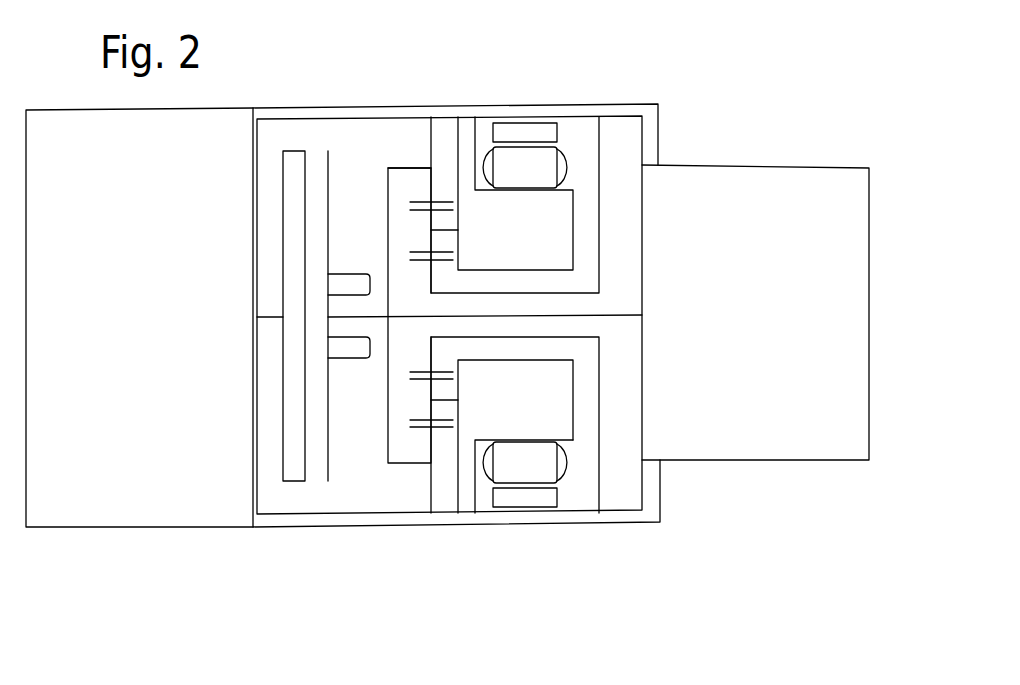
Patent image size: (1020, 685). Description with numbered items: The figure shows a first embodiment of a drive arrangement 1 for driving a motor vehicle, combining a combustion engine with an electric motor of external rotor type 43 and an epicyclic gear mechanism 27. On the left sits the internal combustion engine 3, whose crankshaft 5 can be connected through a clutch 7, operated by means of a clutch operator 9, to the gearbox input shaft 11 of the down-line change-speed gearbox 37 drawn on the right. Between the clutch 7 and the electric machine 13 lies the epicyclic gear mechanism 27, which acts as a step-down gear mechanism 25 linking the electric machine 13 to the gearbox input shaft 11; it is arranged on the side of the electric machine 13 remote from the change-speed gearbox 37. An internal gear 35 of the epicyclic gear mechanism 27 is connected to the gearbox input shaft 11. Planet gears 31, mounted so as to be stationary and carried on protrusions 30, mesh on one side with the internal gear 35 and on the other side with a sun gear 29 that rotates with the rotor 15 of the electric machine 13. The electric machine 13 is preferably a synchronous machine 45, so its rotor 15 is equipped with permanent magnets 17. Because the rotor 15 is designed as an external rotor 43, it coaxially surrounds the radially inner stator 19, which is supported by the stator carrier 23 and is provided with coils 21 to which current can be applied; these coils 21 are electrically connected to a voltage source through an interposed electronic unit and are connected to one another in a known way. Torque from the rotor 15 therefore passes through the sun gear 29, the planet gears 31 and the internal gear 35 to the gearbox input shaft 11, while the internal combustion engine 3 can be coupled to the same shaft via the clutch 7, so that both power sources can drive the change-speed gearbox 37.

The drive arrangement 1 is at (252, 95).
The internal combustion engine 3 is at (157, 507).
The crankshaft 5 is at (268, 320).
The clutch 7 is at (307, 493).
The clutch operator 9 is at (354, 351).
The gearbox input shaft 11 is at (620, 318).
The electric machine 13 is at (569, 480).
The rotor 15 is at (513, 497).
The permanent magnets 17 is at (537, 133).
The stator 19 is at (487, 484).
The coils 21 is at (484, 458).
The stator carrier 23 is at (482, 418).
The step-down gear mechanism 25 is at (433, 150).
The epicyclic gear mechanism 27 is at (428, 467).
The sun gear 29 is at (436, 280).
The protrusions 30 is at (455, 229).
The planet gears 31 is at (418, 231).
The internal gear 35 is at (417, 164).
The change-speed gearbox 37 is at (748, 446).
The external rotor type 43 is at (563, 138).
The synchronous machine 45 is at (583, 462).